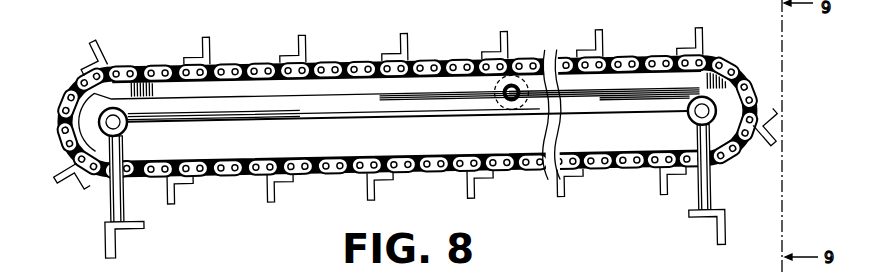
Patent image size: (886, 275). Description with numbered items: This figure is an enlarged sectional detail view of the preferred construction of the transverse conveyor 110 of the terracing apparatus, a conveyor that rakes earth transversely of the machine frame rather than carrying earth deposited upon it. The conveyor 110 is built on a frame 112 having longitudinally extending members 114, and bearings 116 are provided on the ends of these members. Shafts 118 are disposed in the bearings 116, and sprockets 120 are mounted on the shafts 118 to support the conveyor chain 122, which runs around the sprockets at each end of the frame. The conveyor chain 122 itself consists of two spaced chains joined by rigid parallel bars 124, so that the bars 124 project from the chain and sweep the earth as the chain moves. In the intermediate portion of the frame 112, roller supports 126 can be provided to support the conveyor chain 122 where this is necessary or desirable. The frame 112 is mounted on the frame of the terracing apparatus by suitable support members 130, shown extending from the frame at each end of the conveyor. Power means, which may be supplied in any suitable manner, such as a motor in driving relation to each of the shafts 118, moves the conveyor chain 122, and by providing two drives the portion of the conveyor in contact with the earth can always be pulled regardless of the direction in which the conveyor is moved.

The conveyor 110 is at (355, 62).
The frame 112 is at (433, 99).
The longitudinally extending members 114 is at (378, 112).
The bearings 116 is at (121, 98).
The shafts 118 is at (128, 127).
The sprockets 120 is at (87, 73).
The conveyor chain 122 is at (261, 65).
The rigid parallel bars 124 is at (210, 45).
The roller supports 126 is at (523, 91).
The support members 130 is at (125, 200).